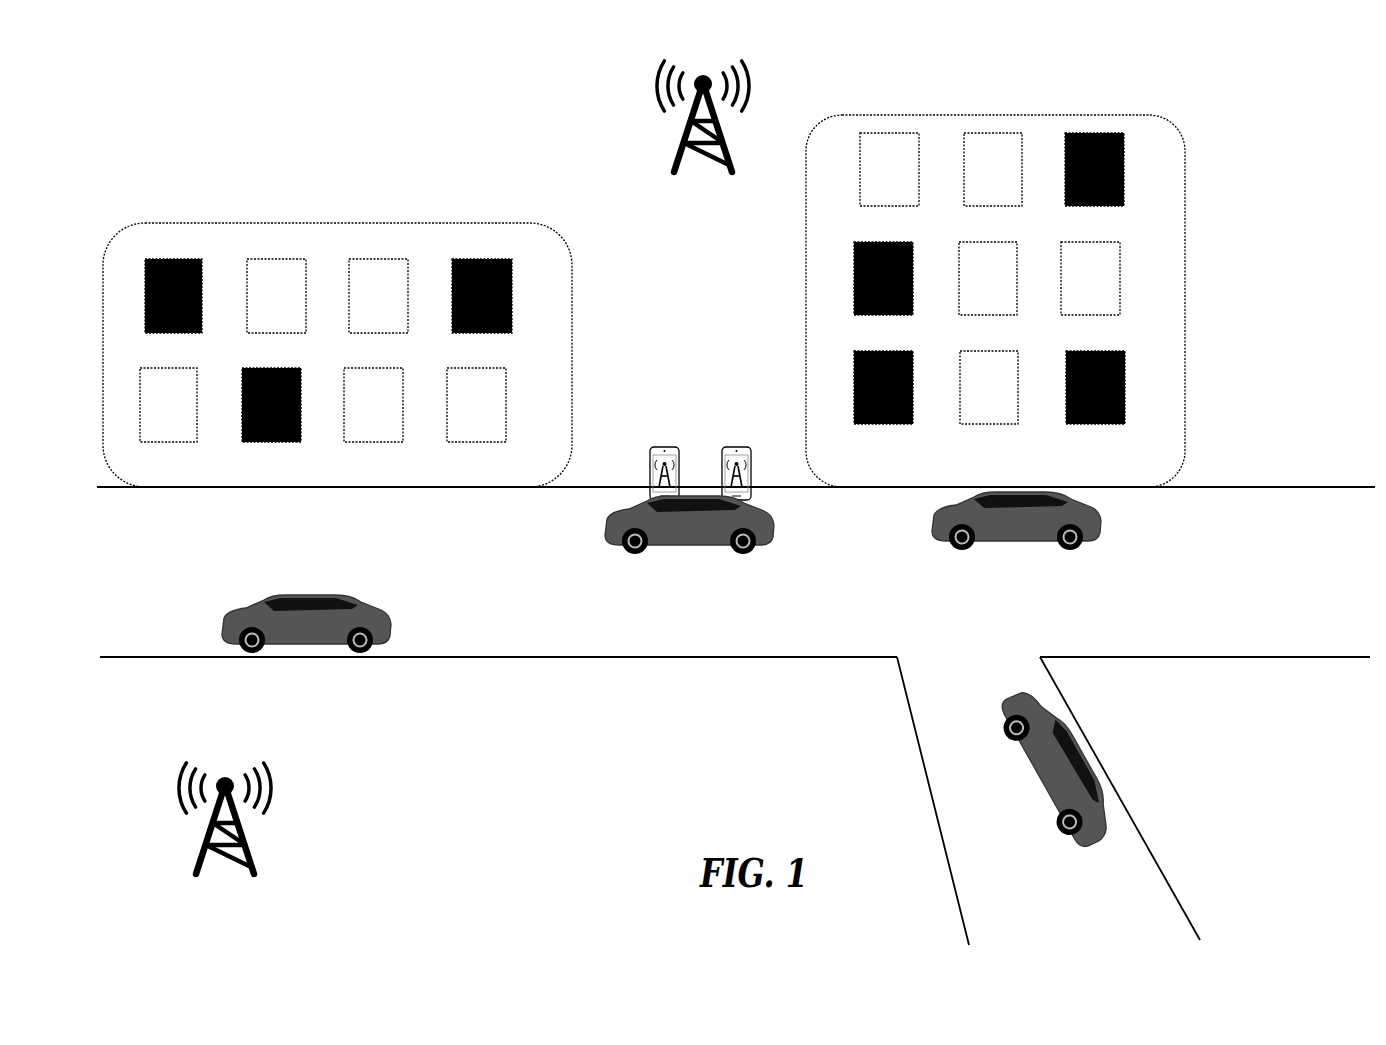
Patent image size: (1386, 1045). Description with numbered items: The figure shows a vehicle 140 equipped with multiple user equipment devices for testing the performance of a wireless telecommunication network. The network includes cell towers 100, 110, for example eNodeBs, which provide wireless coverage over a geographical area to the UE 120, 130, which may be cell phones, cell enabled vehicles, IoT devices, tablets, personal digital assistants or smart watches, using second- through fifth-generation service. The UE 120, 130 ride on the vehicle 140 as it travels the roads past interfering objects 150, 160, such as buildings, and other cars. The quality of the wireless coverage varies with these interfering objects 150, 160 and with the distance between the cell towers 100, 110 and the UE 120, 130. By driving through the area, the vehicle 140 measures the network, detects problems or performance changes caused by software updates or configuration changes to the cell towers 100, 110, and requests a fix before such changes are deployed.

The cell tower 100 is at (703, 74).
The cell tower 110 is at (226, 776).
The user equipment 120 is at (648, 461).
The user equipment 130 is at (718, 461).
The vehicle 140 is at (801, 511).
The interfering object 150 is at (997, 115).
The interfering object 160 is at (338, 223).